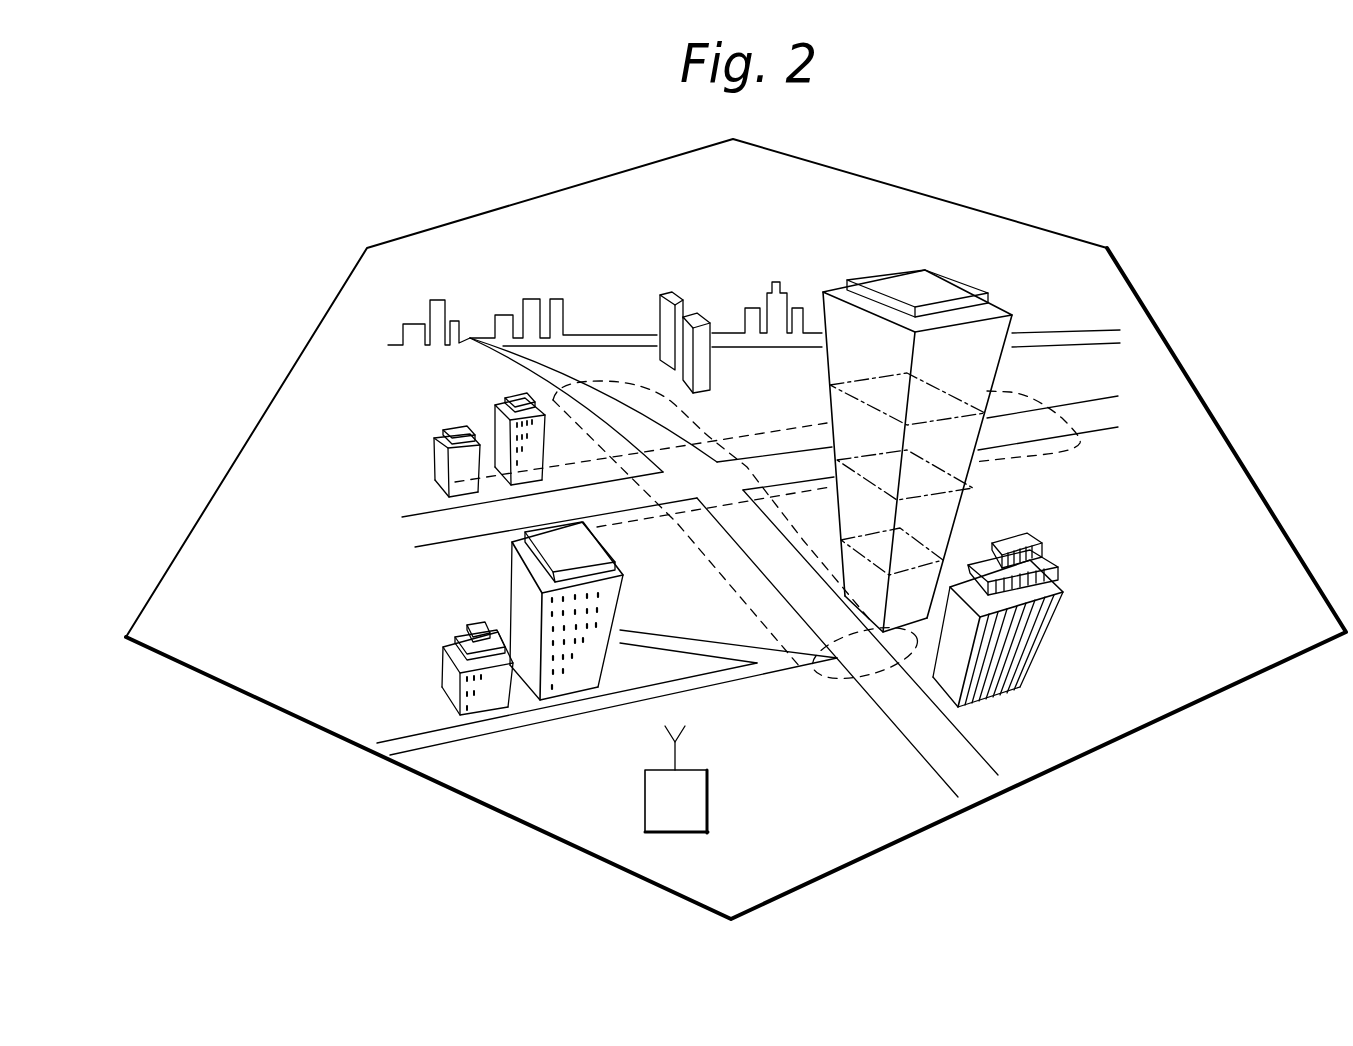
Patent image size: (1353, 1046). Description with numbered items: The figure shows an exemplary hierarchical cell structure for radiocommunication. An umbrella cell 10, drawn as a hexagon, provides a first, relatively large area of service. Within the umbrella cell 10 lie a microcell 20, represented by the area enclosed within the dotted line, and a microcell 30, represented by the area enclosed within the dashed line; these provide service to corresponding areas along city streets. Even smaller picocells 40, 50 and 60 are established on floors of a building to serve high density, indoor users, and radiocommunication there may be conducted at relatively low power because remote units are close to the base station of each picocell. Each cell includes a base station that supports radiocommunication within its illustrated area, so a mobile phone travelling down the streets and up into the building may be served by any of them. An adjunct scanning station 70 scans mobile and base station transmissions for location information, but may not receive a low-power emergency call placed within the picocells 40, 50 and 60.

The umbrella cell 10 is at (415, 775).
The microcell 20 is at (623, 381).
The microcell 30 is at (493, 545).
The picocell 40 is at (945, 393).
The picocell 50 is at (962, 488).
The picocell 60 is at (892, 574).
The adjunct scanning station 70 is at (708, 800).